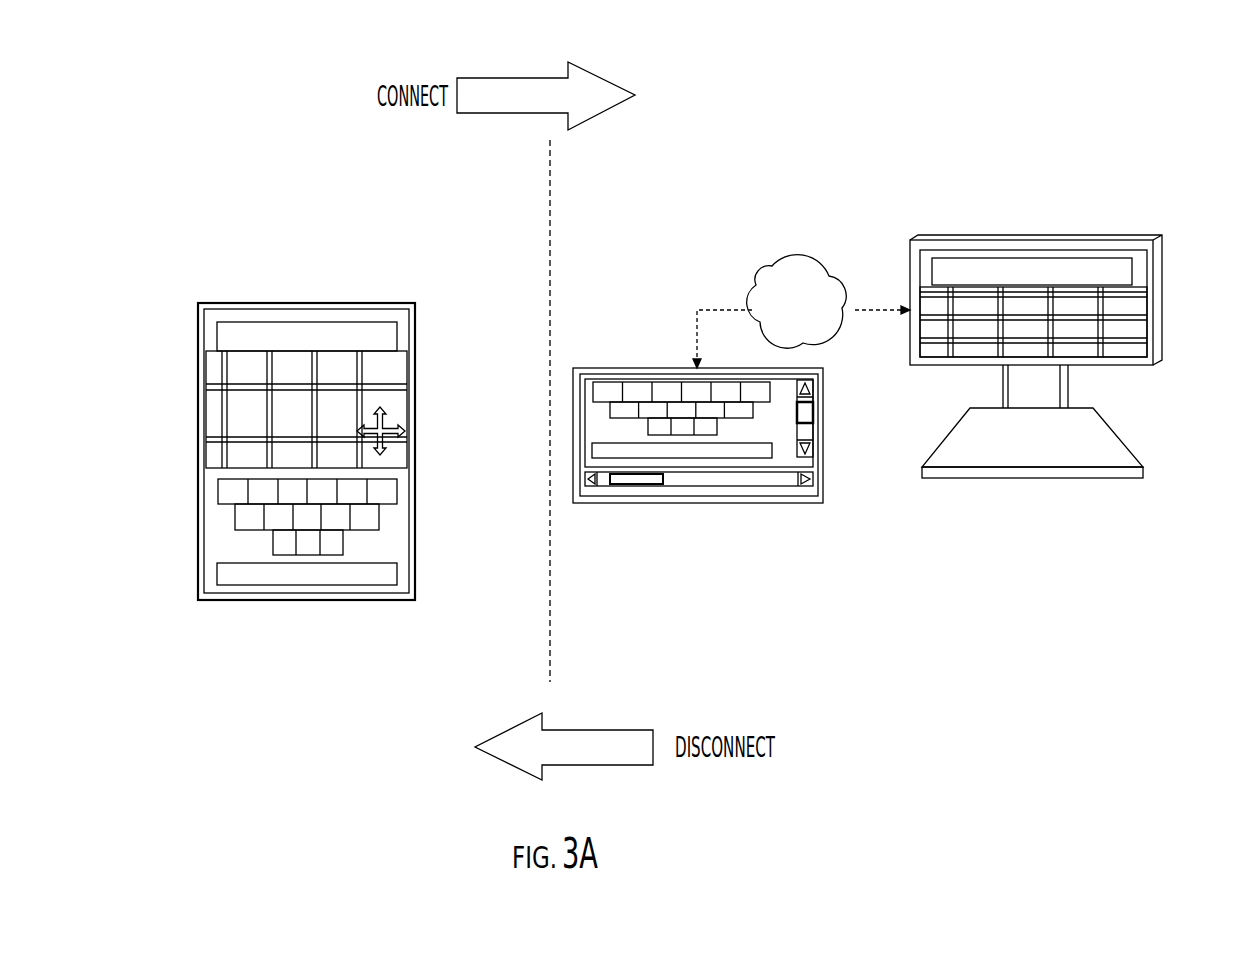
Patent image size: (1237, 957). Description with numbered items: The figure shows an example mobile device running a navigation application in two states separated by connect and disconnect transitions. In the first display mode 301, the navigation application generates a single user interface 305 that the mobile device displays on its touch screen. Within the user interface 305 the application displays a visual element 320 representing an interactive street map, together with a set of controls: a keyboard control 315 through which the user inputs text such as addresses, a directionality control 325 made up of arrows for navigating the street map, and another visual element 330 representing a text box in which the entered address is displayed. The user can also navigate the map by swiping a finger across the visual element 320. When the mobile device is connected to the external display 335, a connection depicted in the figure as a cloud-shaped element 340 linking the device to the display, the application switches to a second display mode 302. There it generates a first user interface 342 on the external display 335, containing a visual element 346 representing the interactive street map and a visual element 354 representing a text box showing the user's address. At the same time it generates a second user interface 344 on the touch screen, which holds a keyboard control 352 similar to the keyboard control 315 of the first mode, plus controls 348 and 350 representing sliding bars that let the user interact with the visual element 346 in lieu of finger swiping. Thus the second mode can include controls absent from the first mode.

The first display mode 301 is at (342, 183).
The second display mode 302 is at (880, 183).
The user interface 305 is at (198, 576).
The keyboard control 315 is at (397, 492).
The visual element 320 is at (407, 408).
The directionality control 325 is at (400, 436).
The visual element representing a text box 330 is at (398, 342).
The external display 335 is at (1040, 480).
The network cloud 340 is at (792, 258).
The first user interface 342 is at (1130, 239).
The second user interface 344 is at (714, 500).
The visual element representing the interactive street map 346 is at (1130, 328).
The control representing a sliding bar 348 is at (750, 490).
The control representing a sliding bar 350 is at (806, 442).
The keyboard control 352 is at (772, 398).
The visual element representing a text box 354 is at (1100, 258).